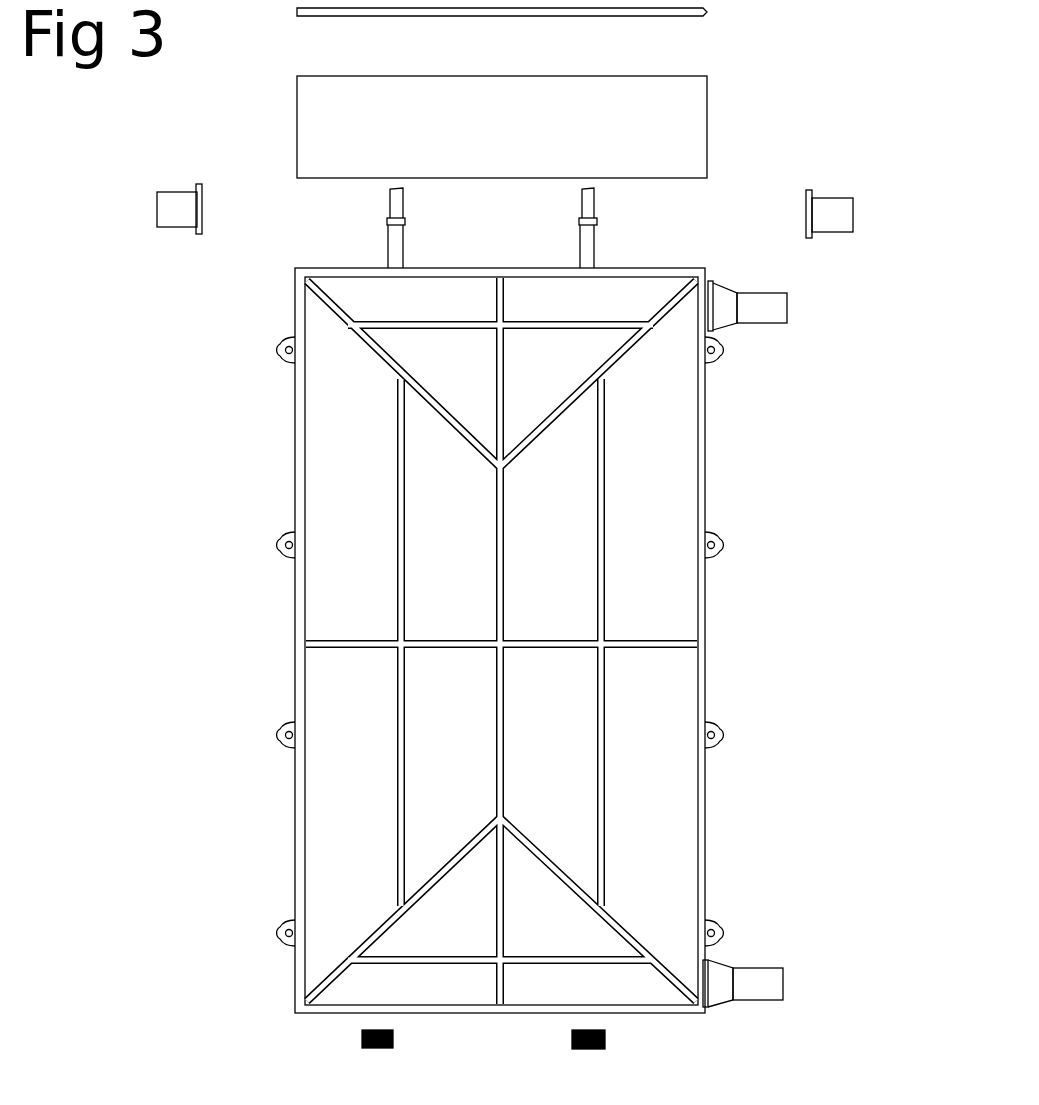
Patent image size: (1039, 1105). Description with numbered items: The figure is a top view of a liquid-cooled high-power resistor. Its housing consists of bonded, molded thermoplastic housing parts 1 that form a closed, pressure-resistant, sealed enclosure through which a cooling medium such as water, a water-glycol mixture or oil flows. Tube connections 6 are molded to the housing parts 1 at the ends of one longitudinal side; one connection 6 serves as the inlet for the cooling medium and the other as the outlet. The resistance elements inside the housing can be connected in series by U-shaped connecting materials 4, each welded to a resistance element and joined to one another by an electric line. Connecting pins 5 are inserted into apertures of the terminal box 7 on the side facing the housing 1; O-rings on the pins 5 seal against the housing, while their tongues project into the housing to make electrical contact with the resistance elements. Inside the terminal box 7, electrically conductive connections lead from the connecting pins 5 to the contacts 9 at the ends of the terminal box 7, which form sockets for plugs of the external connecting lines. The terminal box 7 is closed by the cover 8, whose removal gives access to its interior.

The housing part 1 is at (343, 608).
The connecting material 4 is at (560, 1038).
The connecting pin 5 is at (570, 250).
The connection 6 is at (752, 300).
The terminal box 7 is at (322, 128).
The cover 8 is at (668, 18).
The contact 9 is at (170, 211).